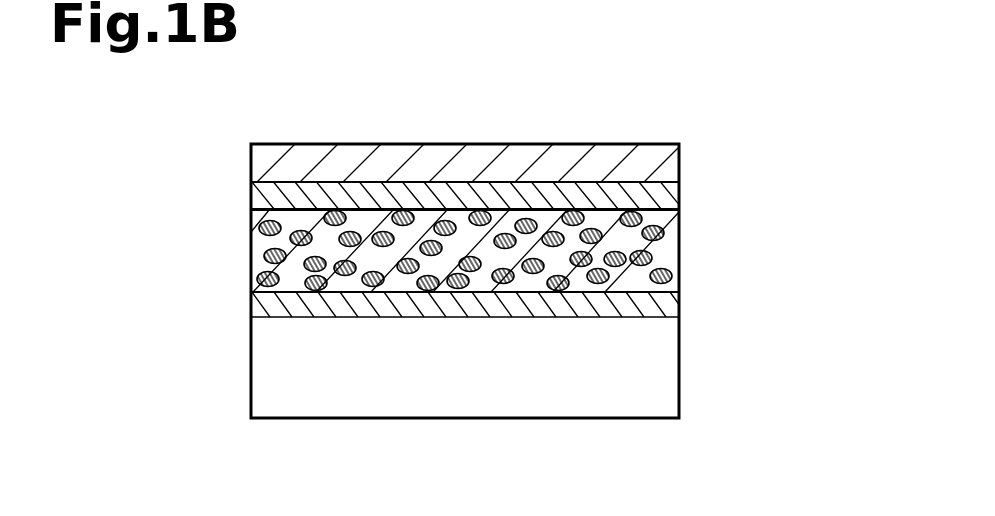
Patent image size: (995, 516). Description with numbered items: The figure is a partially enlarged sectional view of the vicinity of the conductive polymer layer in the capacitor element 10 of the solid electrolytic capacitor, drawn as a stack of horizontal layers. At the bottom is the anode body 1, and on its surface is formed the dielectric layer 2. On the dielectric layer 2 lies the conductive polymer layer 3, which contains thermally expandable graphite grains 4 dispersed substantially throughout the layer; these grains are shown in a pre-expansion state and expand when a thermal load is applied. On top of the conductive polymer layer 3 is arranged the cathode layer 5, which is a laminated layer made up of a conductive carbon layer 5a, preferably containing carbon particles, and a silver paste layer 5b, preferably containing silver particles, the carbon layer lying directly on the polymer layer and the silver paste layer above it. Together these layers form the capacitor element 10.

The anode body 1 is at (670, 342).
The dielectric layer 2 is at (670, 295).
The conductive polymer layer 3 is at (670, 263).
The thermally expandable graphite grains 4 is at (668, 228).
The cathode layer 5 is at (516, 179).
The conductive carbon layer 5a is at (670, 195).
The silver paste layer 5b is at (670, 163).
The capacitor element 10 is at (516, 318).